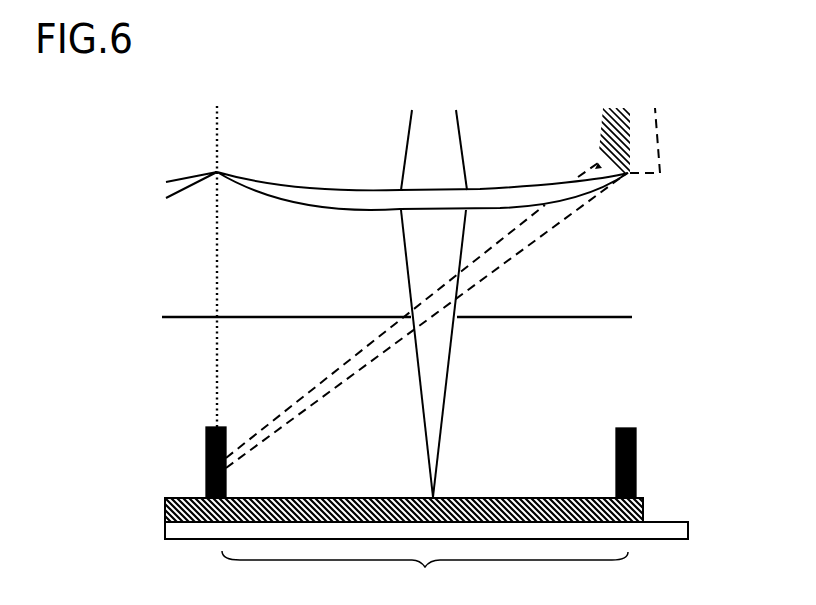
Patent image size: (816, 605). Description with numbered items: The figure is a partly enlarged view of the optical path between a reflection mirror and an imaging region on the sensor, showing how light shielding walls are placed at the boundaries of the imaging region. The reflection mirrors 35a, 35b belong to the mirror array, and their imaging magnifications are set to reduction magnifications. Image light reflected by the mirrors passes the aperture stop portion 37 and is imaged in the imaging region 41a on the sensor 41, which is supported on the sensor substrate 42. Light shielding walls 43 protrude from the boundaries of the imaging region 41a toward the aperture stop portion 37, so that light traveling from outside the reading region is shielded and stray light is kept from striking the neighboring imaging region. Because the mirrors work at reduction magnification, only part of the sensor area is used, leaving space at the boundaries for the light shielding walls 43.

The reflection mirror 35a is at (275, 182).
The reflection mirror 35b is at (182, 181).
The aperture stop portion 37 is at (457, 320).
The sensor 41 is at (645, 502).
The imaging region 41a is at (425, 576).
The sensor substrate 42 is at (688, 523).
The light shielding wall 43 is at (206, 430).